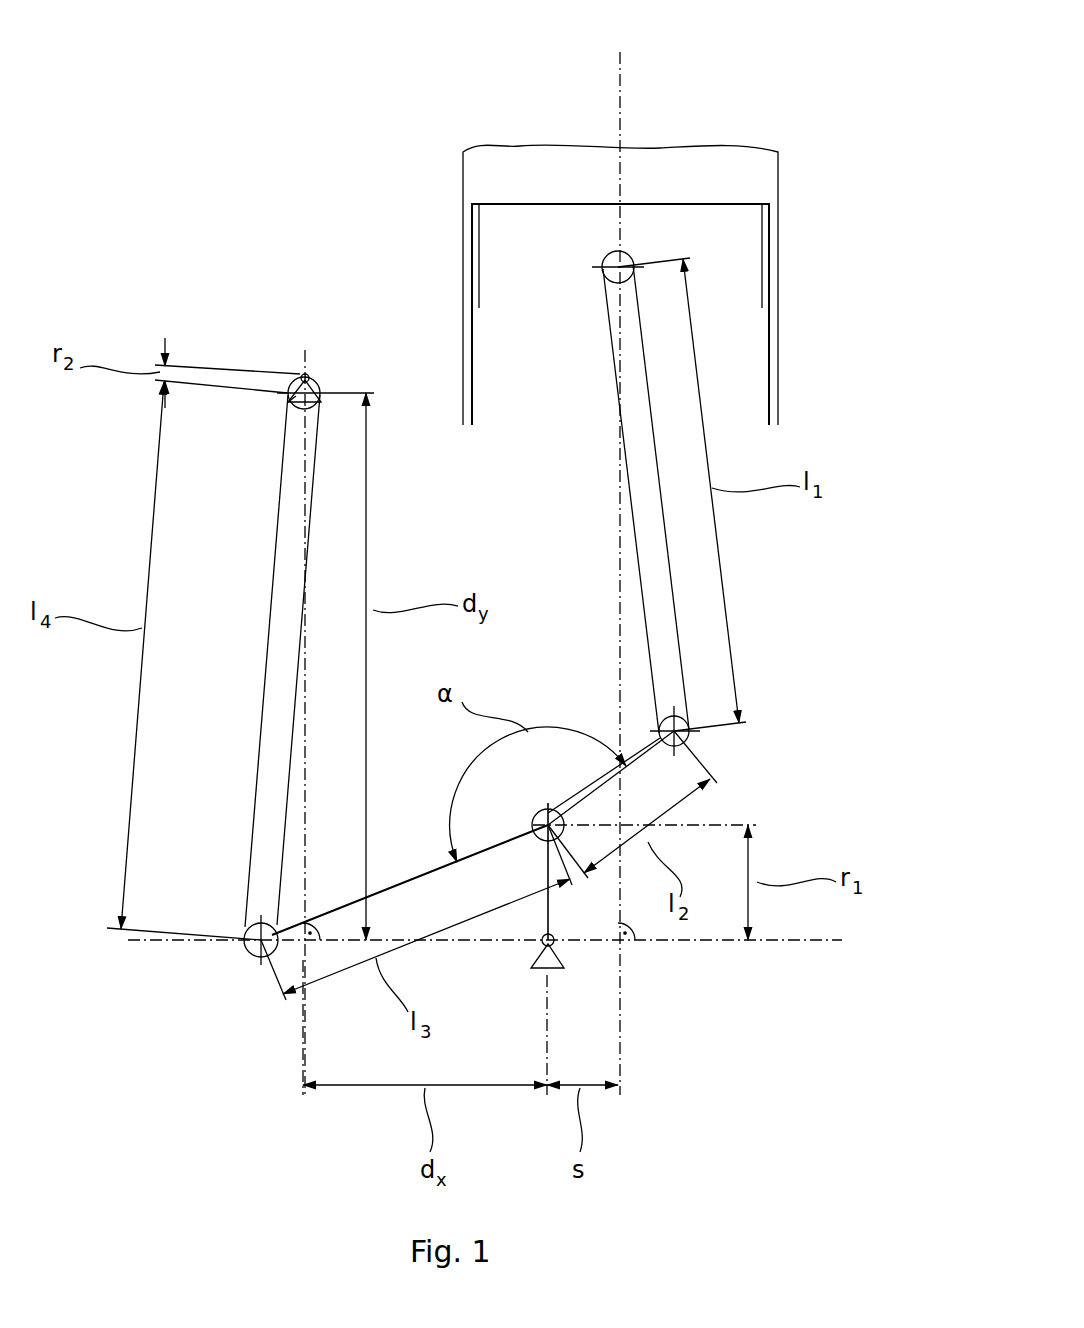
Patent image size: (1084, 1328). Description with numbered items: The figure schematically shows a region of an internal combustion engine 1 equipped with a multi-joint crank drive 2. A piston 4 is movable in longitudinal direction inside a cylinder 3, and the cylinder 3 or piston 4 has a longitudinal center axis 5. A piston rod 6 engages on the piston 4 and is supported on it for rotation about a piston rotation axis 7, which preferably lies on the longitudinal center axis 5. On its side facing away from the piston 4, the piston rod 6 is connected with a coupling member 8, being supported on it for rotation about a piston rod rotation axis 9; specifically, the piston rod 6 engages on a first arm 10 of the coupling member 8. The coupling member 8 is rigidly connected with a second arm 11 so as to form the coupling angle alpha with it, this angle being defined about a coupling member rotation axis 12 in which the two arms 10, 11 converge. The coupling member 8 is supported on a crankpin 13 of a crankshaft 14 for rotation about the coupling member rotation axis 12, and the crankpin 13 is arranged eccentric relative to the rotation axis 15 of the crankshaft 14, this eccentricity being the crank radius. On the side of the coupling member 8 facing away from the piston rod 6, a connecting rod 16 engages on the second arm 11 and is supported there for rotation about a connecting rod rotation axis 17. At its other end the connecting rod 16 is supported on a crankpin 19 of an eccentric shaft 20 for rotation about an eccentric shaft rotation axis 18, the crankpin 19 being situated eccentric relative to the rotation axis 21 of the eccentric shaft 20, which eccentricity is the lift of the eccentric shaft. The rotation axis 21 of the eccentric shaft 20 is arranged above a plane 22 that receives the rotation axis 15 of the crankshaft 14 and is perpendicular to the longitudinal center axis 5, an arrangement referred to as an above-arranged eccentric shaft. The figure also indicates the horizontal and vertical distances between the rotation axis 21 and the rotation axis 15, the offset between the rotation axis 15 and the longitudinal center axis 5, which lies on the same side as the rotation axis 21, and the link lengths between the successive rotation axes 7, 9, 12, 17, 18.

The internal combustion engine 1 is at (745, 108).
The multi-joint crank drive 2 is at (318, 280).
The cylinder 3 is at (778, 385).
The piston 4 is at (740, 242).
The longitudinal center axis 5 is at (620, 55).
The piston rod 6 is at (633, 462).
The piston rotation axis 7 is at (603, 262).
The coupling member 8 is at (525, 665).
The piston rod rotation axis 9 is at (689, 732).
The first arm 10 is at (662, 737).
The second arm 11 is at (422, 877).
The coupling member rotation axis 12 is at (540, 836).
The crankpin 13 is at (534, 824).
The crankshaft 14 is at (540, 952).
The rotation axis of the crankshaft 15 is at (541, 945).
The connecting rod 16 is at (270, 738).
The connecting rod rotation axis 17 is at (248, 950).
The eccentric shaft rotation axis 18 is at (289, 403).
The crankpin of the eccentric shaft 19 is at (318, 380).
The eccentric shaft 20 is at (311, 380).
The rotation axis of the eccentric shaft 21 is at (300, 372).
The plane 22 is at (832, 946).